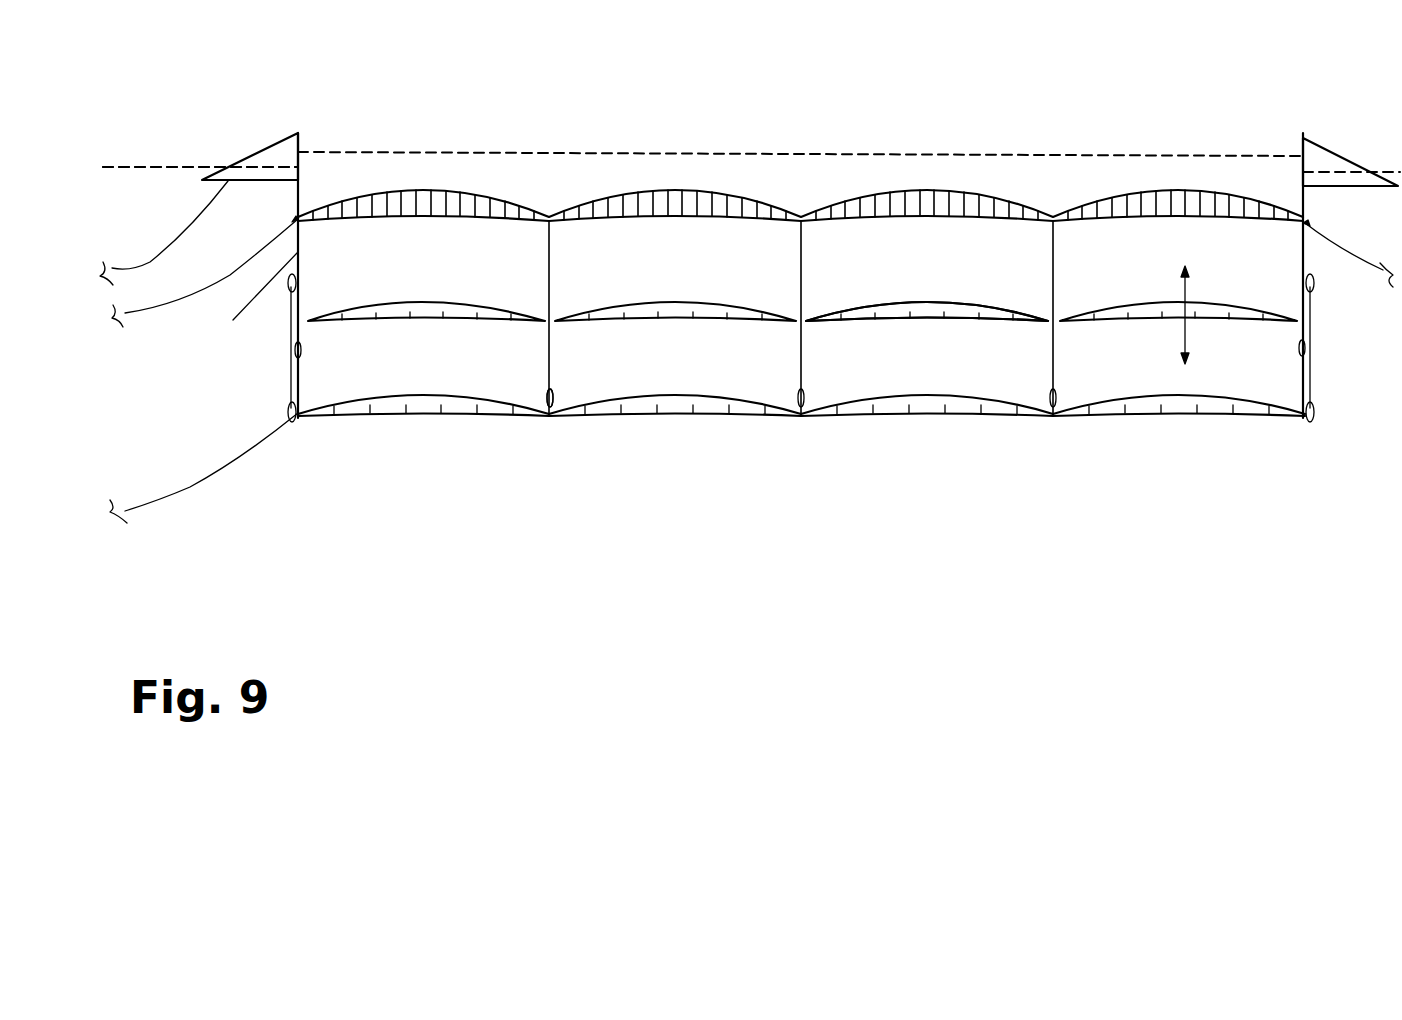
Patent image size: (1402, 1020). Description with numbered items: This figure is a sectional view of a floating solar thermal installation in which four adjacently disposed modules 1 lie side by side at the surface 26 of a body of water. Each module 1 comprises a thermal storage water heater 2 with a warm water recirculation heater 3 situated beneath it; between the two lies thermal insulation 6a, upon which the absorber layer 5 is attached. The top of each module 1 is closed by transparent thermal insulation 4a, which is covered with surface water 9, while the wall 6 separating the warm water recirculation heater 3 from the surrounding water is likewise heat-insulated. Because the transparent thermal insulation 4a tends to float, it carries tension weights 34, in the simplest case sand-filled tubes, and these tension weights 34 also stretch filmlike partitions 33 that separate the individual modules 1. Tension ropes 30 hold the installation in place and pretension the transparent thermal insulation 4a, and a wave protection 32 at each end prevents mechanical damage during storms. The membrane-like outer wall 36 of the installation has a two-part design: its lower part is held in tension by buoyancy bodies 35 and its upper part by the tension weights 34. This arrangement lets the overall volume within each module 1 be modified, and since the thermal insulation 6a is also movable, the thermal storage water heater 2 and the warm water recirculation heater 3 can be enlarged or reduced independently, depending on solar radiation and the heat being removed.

The module 1 is at (640, 460).
The thermal storage water heater 2 is at (800, 183).
The warm water recirculation heater 3 is at (801, 422).
The transparent thermal insulation 4a is at (640, 196).
The absorber layer 5 is at (975, 303).
The wall 6 is at (978, 410).
The thermal insulation 6a is at (862, 316).
The surface water 9 is at (978, 172).
The surface of a body of water 26 is at (172, 165).
The tension ropes 30 is at (145, 267).
The wave protection 32 is at (263, 155).
The filmlike partitions 33 is at (552, 385).
The tension weights 34 is at (548, 396).
The buoyancy bodies 35 is at (303, 283).
The membrane-like outer wall 36 is at (290, 316).